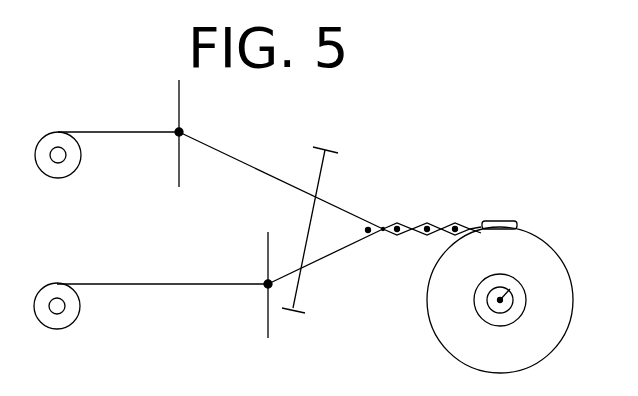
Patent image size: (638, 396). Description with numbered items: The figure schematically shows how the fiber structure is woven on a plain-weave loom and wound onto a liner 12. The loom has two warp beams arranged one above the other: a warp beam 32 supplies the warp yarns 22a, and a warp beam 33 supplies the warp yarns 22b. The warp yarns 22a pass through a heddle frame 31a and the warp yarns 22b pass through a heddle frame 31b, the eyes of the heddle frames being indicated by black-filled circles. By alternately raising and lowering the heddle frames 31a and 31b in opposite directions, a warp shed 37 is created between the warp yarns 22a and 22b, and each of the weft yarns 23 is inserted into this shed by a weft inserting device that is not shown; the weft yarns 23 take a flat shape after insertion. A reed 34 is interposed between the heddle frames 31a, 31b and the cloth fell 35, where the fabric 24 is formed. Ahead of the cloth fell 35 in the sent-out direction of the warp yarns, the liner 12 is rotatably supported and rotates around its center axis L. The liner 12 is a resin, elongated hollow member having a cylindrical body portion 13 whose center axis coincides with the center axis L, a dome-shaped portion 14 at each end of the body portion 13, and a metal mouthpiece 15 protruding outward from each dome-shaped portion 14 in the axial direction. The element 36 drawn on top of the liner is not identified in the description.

The liner 12 is at (533, 362).
The body portion 13 is at (551, 238).
The dome-shaped portion 14 is at (550, 333).
The mouthpiece 15 is at (473, 312).
The center axis L is at (523, 287).
The warp yarns 22a is at (242, 162).
The warp yarns 22b is at (176, 285).
The weft yarns 23 is at (390, 234).
The fabric 24 is at (436, 226).
The heddle frame 31a is at (178, 92).
The heddle frame 31b is at (267, 317).
The warp beam 32 is at (65, 153).
The warp beam 33 is at (64, 304).
The reed 34 is at (320, 170).
The cloth fell 35 is at (382, 227).
The cap 36 is at (501, 221).
The warp shed 37 is at (358, 229).